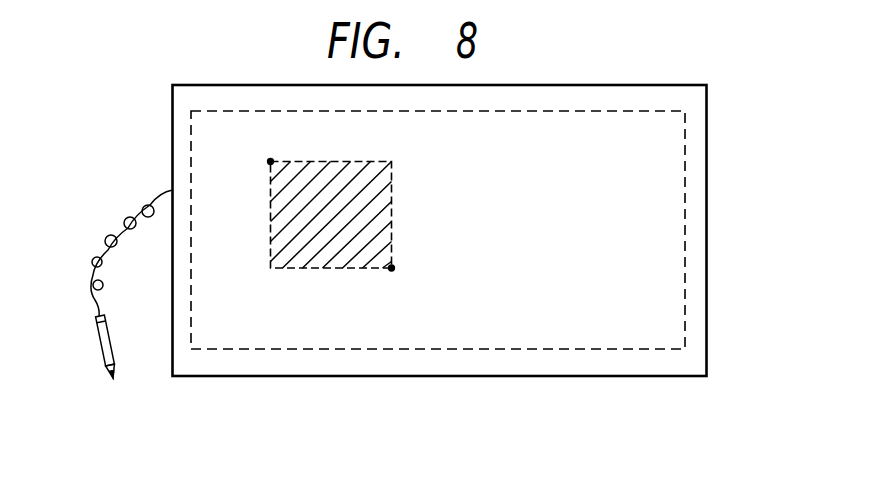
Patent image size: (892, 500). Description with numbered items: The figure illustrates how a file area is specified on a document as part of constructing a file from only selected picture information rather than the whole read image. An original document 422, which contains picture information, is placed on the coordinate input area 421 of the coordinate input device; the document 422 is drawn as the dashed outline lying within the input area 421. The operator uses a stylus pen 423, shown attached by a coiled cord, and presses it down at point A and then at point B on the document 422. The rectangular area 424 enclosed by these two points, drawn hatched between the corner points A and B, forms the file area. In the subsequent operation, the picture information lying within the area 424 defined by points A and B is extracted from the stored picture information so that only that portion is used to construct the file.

The coordinate input area 421 is at (711, 219).
The document 422 is at (586, 350).
The stylus pen 423 is at (97, 352).
The file area 424 is at (392, 185).